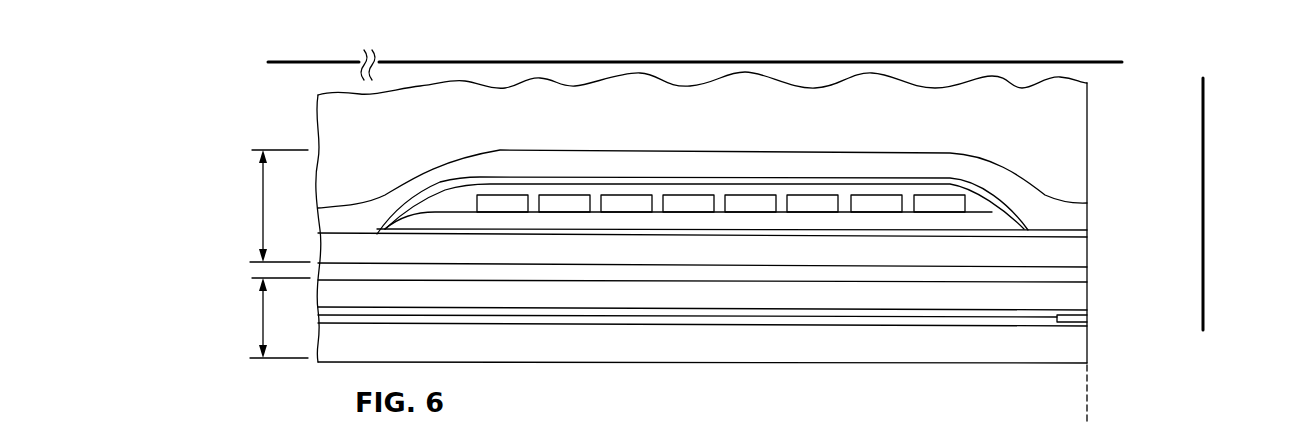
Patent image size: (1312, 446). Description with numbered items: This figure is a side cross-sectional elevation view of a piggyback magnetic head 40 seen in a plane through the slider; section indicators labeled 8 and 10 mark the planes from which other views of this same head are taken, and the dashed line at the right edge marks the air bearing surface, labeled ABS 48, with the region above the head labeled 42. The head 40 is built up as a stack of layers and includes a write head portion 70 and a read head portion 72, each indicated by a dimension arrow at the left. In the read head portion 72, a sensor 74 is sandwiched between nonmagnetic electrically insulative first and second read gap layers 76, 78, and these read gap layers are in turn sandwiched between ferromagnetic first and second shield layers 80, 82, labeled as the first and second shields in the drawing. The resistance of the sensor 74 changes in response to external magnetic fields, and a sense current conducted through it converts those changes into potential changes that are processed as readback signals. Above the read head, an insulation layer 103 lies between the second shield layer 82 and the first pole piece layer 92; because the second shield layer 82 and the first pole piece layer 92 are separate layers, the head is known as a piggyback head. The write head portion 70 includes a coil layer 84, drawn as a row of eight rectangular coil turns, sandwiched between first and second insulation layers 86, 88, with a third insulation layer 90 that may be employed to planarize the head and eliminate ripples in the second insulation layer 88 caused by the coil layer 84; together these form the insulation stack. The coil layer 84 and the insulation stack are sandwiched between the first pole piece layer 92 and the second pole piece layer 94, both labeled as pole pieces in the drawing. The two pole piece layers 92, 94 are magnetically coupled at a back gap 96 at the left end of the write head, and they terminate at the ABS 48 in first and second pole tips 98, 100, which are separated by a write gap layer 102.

The section line 8- 8 is at (1216, 84).
The section line 10- 10 is at (277, 50).
The piggyback magnetic head 40 is at (297, 104).
The overcoat layer 42 is at (1087, 108).
The air bearing surface (ABS) 48 is at (1087, 416).
The write head portion 70 is at (263, 212).
The read head portion 72 is at (263, 321).
The sensor 74 is at (1087, 319).
The first read gap layer 76 is at (768, 327).
The second read gap layer 78 is at (735, 309).
The first shield layer 80 is at (863, 350).
The second shield layer 82 is at (963, 298).
The coil layer 84 is at (748, 200).
The first insulation layer 86 is at (662, 222).
The second insulation layer 88 is at (984, 205).
The third insulation layer 90 is at (540, 182).
The first pole piece layer 92 is at (1010, 257).
The second pole piece layer 94 is at (878, 163).
The back gap 96 is at (353, 233).
The first pole tip 98 is at (1087, 255).
The second pole tip 100 is at (1087, 211).
The write gap layer 102 is at (1087, 233).
The insulation layer 103 is at (922, 273).